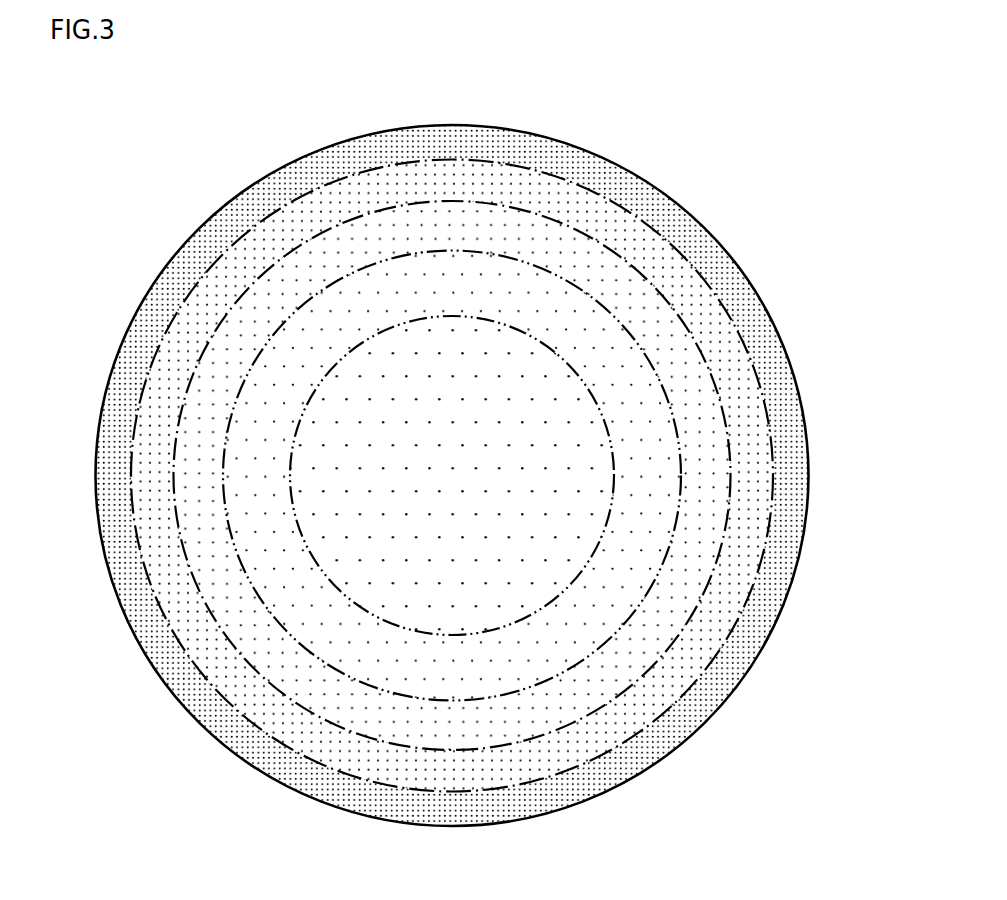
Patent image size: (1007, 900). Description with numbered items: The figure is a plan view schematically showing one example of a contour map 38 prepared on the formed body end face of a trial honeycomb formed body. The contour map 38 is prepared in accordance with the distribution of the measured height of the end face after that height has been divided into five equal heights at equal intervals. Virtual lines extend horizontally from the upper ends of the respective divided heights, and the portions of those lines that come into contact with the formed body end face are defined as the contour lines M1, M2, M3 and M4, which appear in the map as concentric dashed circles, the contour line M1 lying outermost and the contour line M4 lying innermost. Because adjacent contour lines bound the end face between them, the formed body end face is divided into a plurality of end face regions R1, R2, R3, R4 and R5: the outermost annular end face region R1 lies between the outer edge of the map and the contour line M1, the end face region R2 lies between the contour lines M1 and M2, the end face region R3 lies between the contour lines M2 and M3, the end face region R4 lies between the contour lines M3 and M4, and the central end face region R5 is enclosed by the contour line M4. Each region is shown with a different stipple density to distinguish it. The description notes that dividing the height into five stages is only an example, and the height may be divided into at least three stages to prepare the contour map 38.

The contour map 38 is at (734, 132).
The end face region R1 is at (430, 820).
The end face region R2 is at (338, 757).
The end face region R3 is at (277, 677).
The end face region R4 is at (288, 605).
The end face region R5 is at (310, 532).
The contour line M1 is at (768, 530).
The contour line M2 is at (722, 600).
The contour line M3 is at (593, 643).
The contour line M4 is at (455, 637).